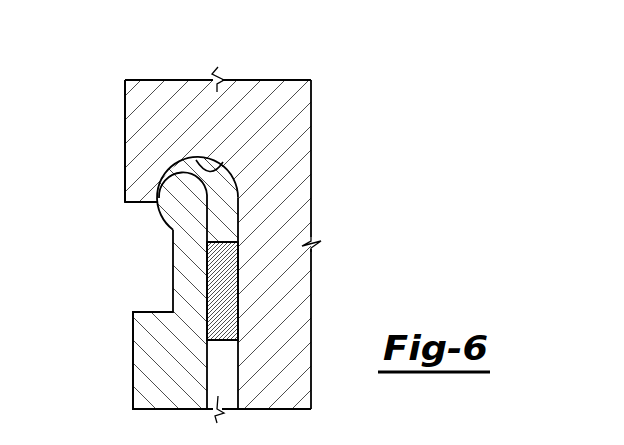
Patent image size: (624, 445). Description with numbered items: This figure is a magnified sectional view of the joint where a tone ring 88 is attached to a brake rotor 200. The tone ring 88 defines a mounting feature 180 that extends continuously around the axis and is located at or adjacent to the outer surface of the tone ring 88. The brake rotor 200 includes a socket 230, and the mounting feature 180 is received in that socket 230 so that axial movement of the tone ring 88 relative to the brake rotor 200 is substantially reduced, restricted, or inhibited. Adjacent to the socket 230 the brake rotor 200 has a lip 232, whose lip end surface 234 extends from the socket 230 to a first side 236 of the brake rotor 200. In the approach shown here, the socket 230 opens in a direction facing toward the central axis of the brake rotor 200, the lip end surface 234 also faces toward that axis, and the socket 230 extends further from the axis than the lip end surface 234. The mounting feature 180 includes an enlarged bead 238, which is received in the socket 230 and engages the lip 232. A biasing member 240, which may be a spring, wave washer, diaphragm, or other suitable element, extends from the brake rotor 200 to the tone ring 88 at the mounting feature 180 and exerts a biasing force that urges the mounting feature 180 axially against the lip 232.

The tone ring 88 is at (85, 361).
The mounting feature 180 is at (138, 274).
The brake rotor 200 is at (227, 128).
The socket 230 is at (224, 162).
The lip 232 is at (110, 133).
The lip end surface 234 is at (141, 203).
The first side 236 is at (126, 178).
The enlarged bead 238 is at (178, 197).
The biasing member 240 is at (240, 296).